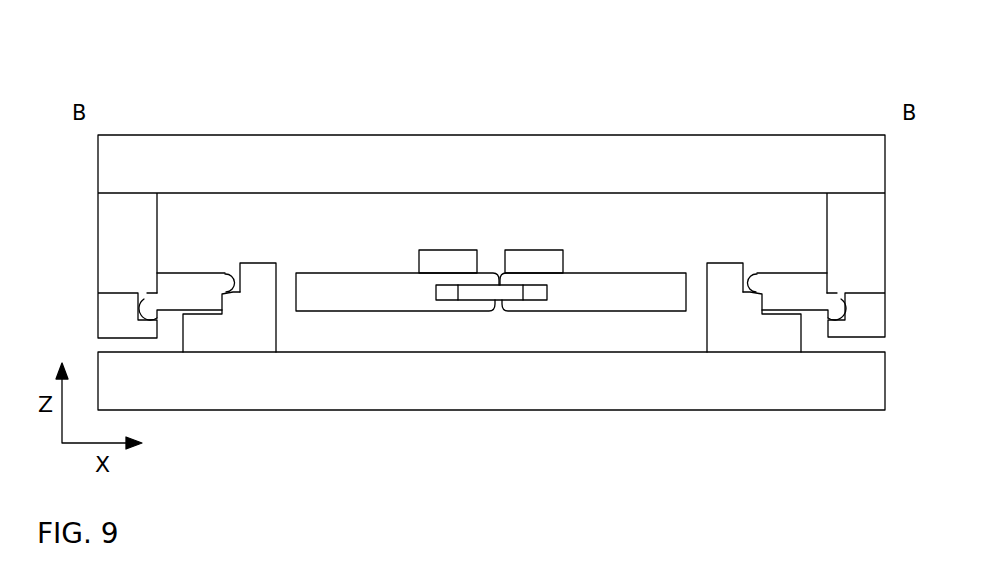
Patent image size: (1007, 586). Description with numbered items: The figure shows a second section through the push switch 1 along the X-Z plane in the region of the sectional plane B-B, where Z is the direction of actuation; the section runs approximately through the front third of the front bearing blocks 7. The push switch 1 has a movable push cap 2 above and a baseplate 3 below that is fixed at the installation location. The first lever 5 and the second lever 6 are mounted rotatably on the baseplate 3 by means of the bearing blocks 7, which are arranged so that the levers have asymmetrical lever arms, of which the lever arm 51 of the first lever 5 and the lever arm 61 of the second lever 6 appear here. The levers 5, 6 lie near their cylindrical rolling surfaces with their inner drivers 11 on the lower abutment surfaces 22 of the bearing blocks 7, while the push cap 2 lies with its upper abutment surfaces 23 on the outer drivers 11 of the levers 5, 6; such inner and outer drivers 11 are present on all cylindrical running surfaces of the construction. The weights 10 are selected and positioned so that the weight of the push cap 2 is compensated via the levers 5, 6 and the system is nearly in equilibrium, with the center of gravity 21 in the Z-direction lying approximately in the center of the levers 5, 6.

The push switch 1 is at (393, 103).
The push cap 2 is at (597, 135).
The baseplate 3 is at (718, 407).
The first lever 5 is at (373, 273).
The second lever 6 is at (613, 273).
The bearing blocks 7 is at (275, 323).
The weights 10 is at (537, 251).
The drivers 11 is at (228, 283).
The center of gravity 21 is at (535, 293).
The lower abutment surfaces 22 is at (231, 294).
The upper abutment surfaces 23 is at (148, 295).
The lever arm 51 is at (188, 288).
The lever arm 61 is at (791, 290).